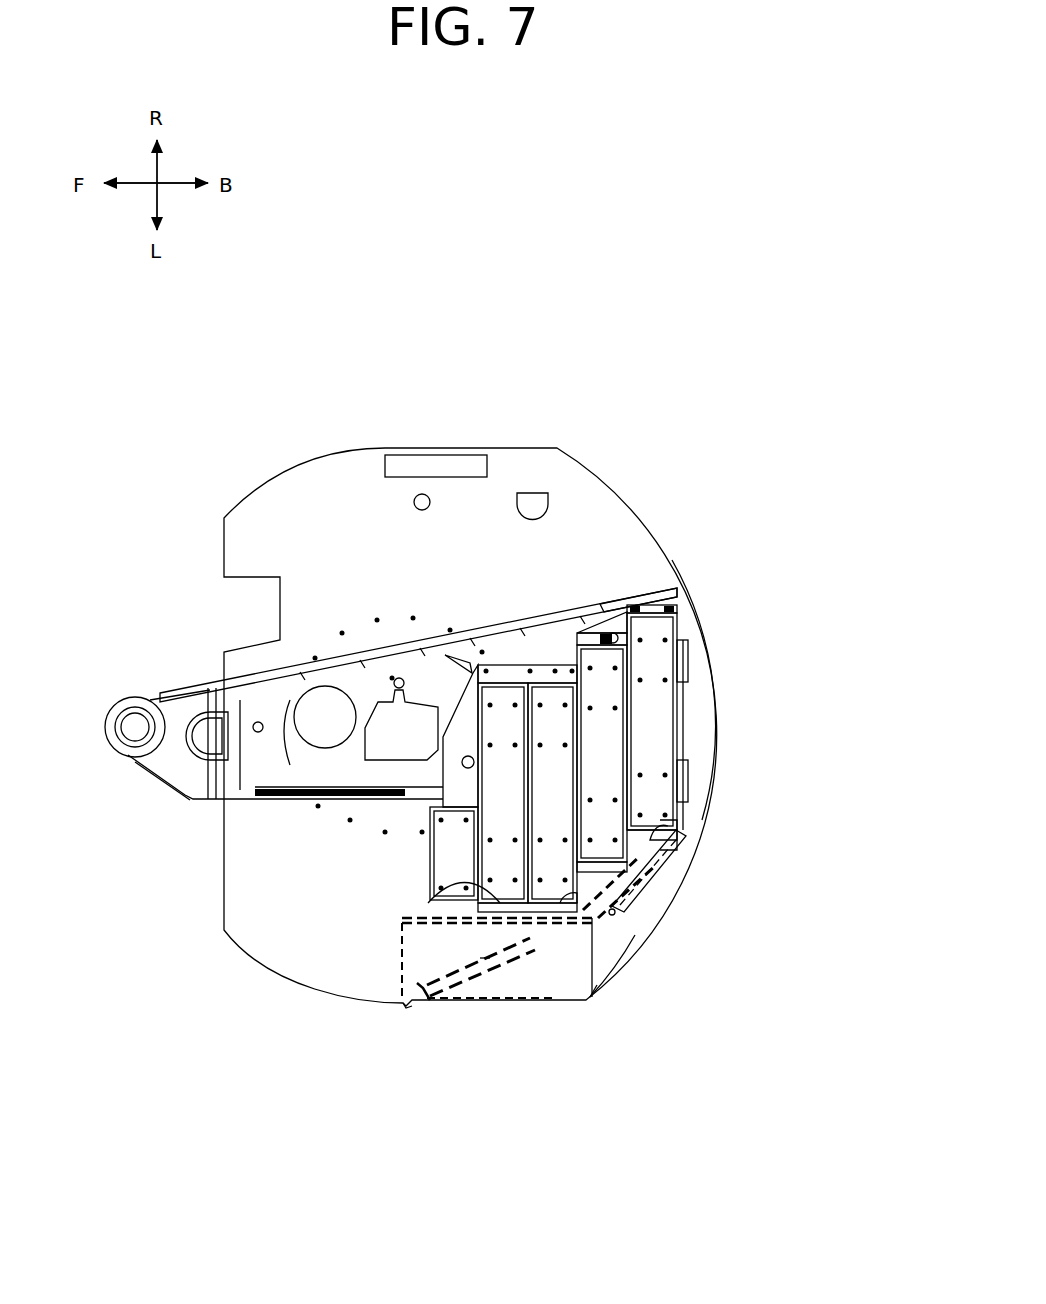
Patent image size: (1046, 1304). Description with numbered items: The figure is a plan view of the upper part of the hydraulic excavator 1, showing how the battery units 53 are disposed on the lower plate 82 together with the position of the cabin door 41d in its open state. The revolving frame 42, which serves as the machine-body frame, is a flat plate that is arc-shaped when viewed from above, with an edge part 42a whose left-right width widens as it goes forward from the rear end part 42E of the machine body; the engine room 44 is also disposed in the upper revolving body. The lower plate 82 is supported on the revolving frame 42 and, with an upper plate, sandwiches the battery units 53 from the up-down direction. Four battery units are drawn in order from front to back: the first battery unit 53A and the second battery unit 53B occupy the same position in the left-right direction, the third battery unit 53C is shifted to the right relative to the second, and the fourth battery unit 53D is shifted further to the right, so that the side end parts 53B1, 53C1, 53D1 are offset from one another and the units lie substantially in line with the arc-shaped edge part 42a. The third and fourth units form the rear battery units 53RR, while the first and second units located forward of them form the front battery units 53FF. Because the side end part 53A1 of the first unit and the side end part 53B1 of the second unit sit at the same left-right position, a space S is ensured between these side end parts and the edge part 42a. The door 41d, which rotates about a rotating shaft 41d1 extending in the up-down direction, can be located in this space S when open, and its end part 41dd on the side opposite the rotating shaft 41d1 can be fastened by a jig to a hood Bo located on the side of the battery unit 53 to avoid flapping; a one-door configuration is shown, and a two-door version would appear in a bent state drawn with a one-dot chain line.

The hydraulic excavator 1 is at (707, 370).
The engine room 44 is at (258, 487).
The lower plate 82 is at (540, 677).
The revolving frame 42 is at (320, 957).
The rear end part 42E is at (717, 703).
The edge part 42a is at (612, 957).
The battery unit 53 is at (464, 779).
The first battery unit 53A is at (507, 775).
The second battery unit 53B is at (547, 792).
The third battery unit 53C is at (600, 678).
The fourth battery unit 53D is at (655, 738).
The front battery units 53FF is at (321, 814).
The rear battery units 53RR is at (720, 733).
The side end part of the first battery unit 53A1 is at (478, 897).
The side end part of the second battery unit 53B1 is at (585, 900).
The side end part of the third battery unit 53C1 is at (663, 903).
The side end part of the fourth battery unit 53D1 is at (680, 827).
The hood Bo is at (612, 912).
The door 41d is at (480, 980).
The end part of the door 41dd is at (537, 943).
The rotating shaft 41d1 is at (400, 1012).
The space S is at (493, 1000).